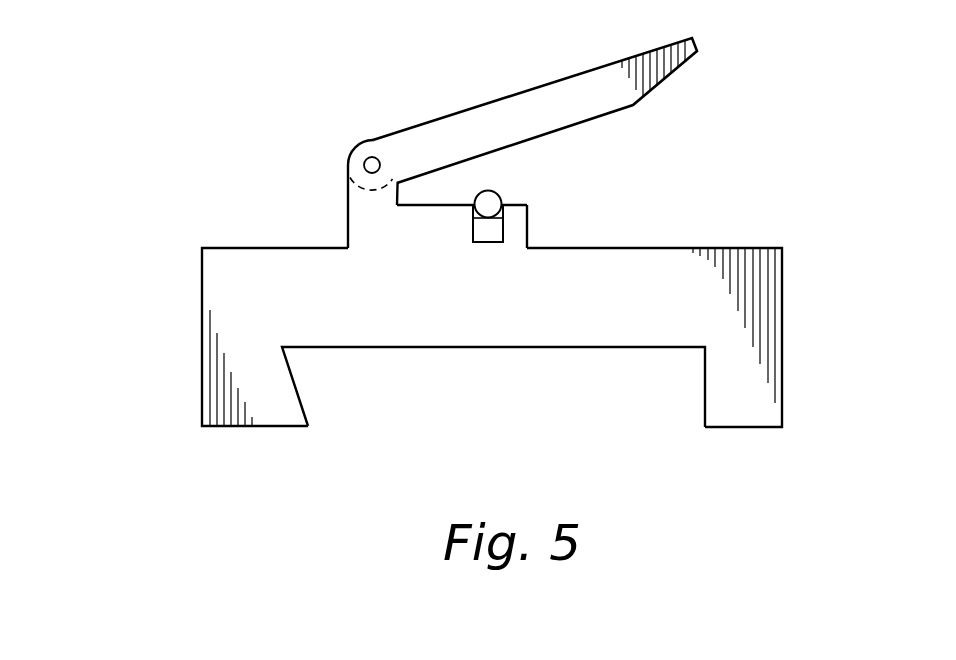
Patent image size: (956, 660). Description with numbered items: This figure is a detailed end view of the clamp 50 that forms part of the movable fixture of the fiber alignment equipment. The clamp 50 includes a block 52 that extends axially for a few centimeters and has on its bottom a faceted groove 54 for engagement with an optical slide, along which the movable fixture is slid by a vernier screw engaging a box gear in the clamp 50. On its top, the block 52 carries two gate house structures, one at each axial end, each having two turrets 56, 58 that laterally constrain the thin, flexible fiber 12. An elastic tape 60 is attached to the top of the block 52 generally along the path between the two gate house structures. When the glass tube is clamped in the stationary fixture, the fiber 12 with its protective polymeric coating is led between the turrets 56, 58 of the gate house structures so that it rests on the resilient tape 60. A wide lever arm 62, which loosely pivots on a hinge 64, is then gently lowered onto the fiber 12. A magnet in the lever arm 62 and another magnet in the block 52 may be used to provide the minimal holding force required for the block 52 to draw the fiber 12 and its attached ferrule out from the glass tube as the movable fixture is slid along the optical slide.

The clamp 50 is at (440, 231).
The block 52 is at (782, 292).
The faceted groove 54 is at (705, 392).
The turret 56 is at (446, 224).
The turret 58 is at (522, 220).
The elastic tape 60 is at (490, 235).
The fiber 12 is at (497, 192).
The lever arm 62 is at (598, 66).
The hinge 64 is at (372, 165).